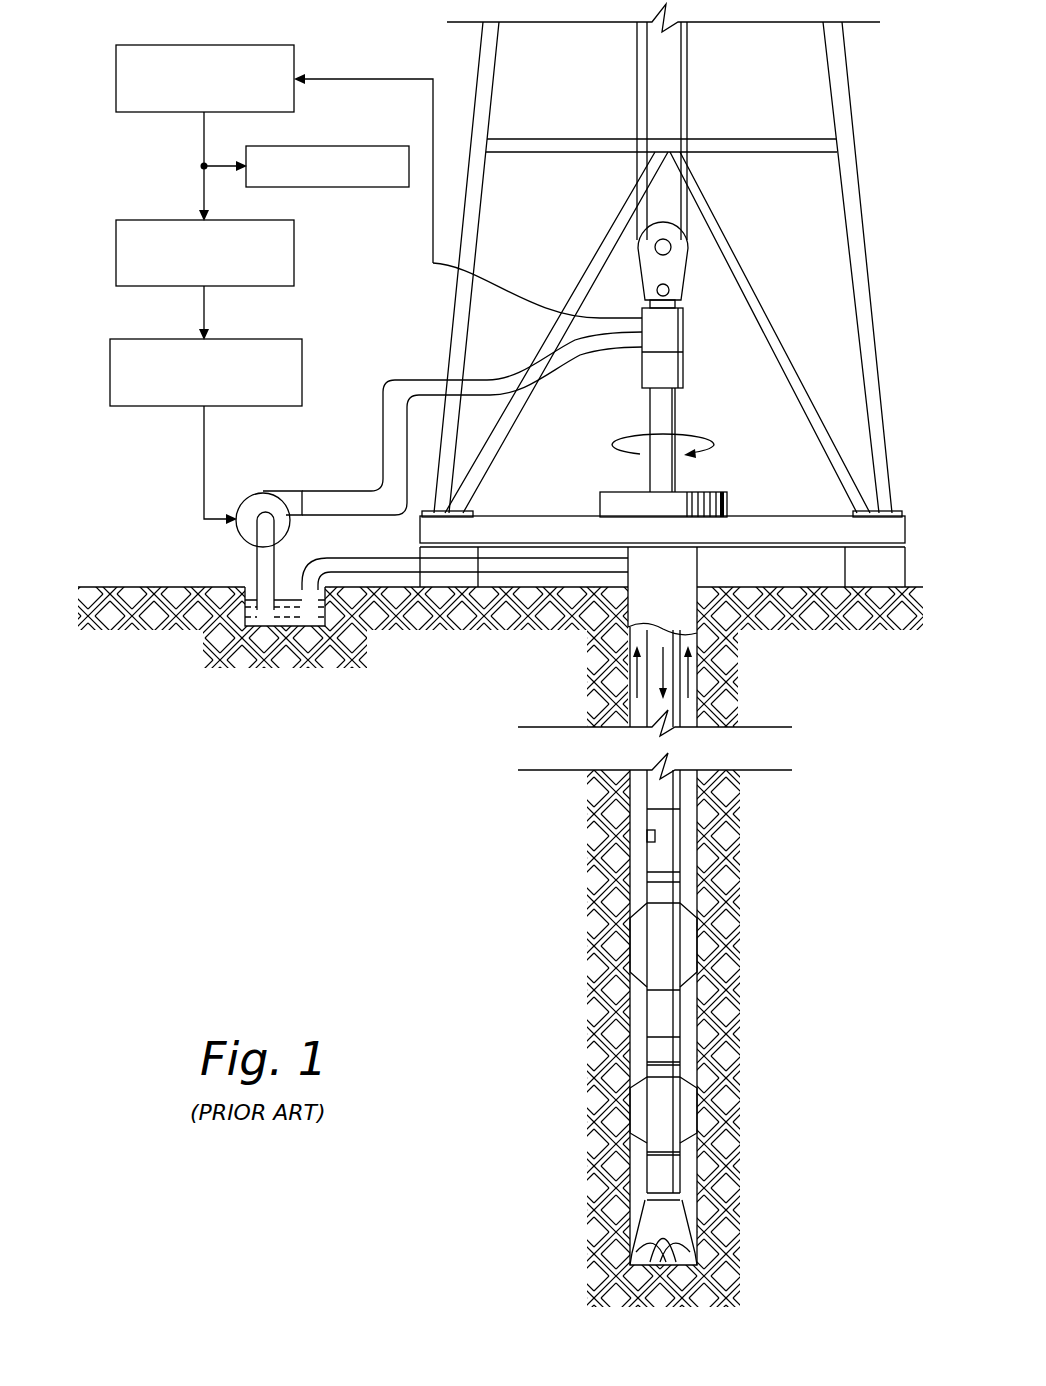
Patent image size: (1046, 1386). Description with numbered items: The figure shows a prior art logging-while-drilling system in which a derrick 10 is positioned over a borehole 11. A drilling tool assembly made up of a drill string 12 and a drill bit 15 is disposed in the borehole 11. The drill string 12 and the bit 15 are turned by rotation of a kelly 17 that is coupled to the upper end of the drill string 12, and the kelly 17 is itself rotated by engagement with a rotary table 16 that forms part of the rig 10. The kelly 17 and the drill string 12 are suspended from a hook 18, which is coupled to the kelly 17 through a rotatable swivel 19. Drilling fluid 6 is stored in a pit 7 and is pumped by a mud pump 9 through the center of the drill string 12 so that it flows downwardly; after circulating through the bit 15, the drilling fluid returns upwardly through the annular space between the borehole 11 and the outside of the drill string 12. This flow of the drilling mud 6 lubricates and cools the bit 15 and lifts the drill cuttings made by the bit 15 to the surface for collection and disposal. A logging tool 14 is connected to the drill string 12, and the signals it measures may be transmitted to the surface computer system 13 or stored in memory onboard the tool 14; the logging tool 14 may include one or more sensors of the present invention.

The drilling fluid 6 is at (288, 620).
The pit 7 is at (243, 616).
The mud pump 9 is at (268, 491).
The derrick 10 is at (416, 335).
The borehole 11 is at (697, 876).
The drill string 12 is at (674, 799).
The surface computer system 13 is at (104, 22).
The logging tool 14 is at (770, 1052).
The drill bit 15 is at (677, 1232).
The rotary table 16 is at (712, 492).
The kelly 17 is at (677, 413).
The hook 18 is at (686, 270).
The swivel 19 is at (687, 373).